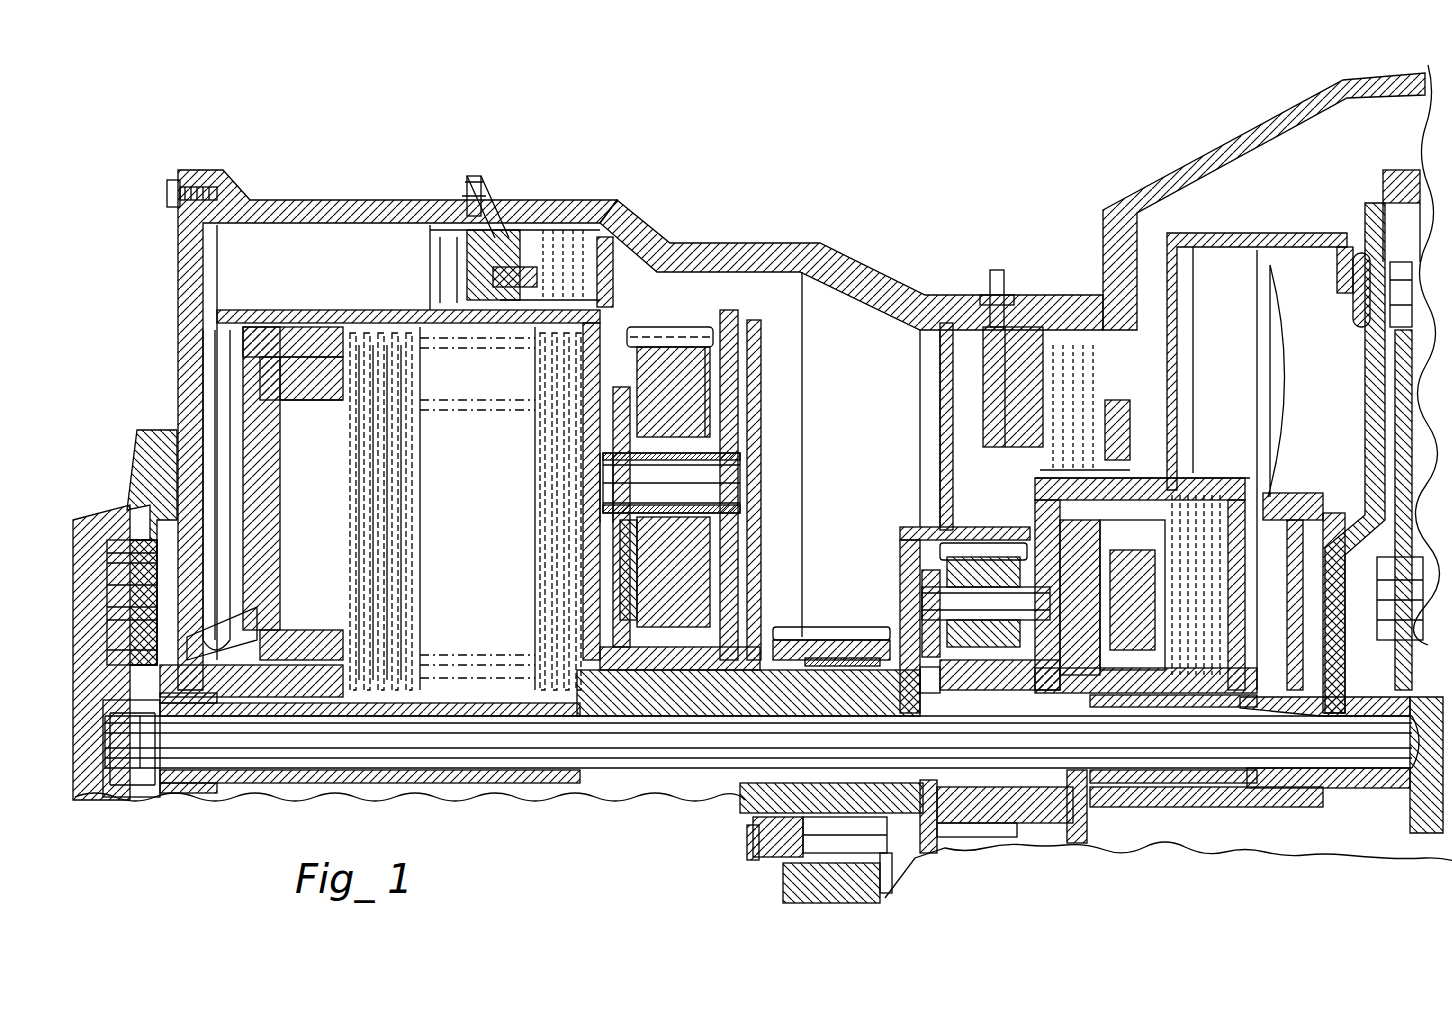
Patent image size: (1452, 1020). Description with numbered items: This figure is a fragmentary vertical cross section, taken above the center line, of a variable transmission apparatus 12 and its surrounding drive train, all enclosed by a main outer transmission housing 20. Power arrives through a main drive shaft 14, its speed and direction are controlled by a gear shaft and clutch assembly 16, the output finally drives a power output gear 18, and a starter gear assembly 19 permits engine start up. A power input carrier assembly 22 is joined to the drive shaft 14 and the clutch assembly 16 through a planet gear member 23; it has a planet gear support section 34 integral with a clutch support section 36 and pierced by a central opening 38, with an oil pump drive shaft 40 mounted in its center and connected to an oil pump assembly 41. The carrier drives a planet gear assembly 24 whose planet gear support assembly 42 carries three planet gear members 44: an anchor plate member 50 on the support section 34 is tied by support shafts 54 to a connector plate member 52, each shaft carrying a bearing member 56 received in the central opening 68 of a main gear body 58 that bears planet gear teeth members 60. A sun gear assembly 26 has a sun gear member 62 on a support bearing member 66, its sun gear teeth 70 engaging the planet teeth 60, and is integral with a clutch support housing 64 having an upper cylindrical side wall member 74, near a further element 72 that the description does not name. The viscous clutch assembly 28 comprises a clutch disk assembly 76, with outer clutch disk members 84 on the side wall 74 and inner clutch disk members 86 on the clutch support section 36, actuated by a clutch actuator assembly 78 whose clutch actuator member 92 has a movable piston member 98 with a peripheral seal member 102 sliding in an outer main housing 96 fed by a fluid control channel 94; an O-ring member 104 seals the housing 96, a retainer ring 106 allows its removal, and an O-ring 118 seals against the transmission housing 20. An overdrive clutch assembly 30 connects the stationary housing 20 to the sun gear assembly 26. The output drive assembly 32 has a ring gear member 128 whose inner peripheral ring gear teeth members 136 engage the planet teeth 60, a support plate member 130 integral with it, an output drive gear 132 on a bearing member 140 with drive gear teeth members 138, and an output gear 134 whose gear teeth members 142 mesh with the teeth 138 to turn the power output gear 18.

The variable transmission apparatus 12 is at (775, 295).
The main drive shaft 14 is at (1050, 843).
The gear shaft and clutch assembly 16 is at (1010, 470).
The power output gear 18 is at (880, 893).
The starter gear assembly 19 is at (1377, 160).
The main outer transmission housing 20 is at (628, 195).
The power input carrier assembly 22 is at (893, 573).
The planet gear member 23 is at (900, 533).
The planet gear assembly 24 is at (750, 398).
The sun gear assembly 26 is at (607, 692).
The viscous clutch assembly 28 is at (380, 245).
The overdrive clutch assembly 30 is at (555, 225).
The output drive assembly 32 is at (927, 520).
The planet gear support section 34 is at (810, 630).
The clutch support section 36 is at (507, 713).
The central opening 38 is at (390, 760).
The oil pump drive shaft 40 is at (195, 750).
The oil pump assembly 41 is at (95, 683).
The planet gear support assembly 42 is at (610, 440).
The planet gear members 44 is at (660, 330).
The anchor plate member 50 is at (705, 560).
The connector plate member 52 is at (615, 418).
The support shafts 54 is at (735, 478).
The bearing member 56 is at (620, 540).
The main gear body 58 is at (705, 590).
The planet gear teeth members 60 is at (683, 342).
The sun gear member 62 is at (677, 690).
The clutch support housing 64 is at (302, 318).
The support bearing member 66 is at (580, 690).
The central opening 68 is at (647, 690).
The sun gear teeth 70 is at (713, 690).
The housing rim 72 is at (610, 280).
The upper cylindrical side wall member 74 is at (400, 310).
The clutch disk assembly 76 is at (200, 385).
The clutch actuator assembly 78 is at (245, 490).
The outer clutch disk members 84 is at (355, 320).
The inner clutch disk members 86 is at (337, 680).
The clutch actuator member 92 is at (230, 432).
The fluid control channel 94 is at (270, 650).
The outer main housing 96 is at (248, 355).
The movable piston member 98 is at (235, 488).
The peripheral seal member 102 is at (253, 352).
The O-ring member 104 is at (280, 345).
The retainer ring 106 is at (243, 330).
The O-ring 118 is at (470, 215).
The ring gear member 128 is at (735, 322).
The support plate member 130 is at (760, 428).
The output drive gear 132 is at (737, 870).
The output gear 134 is at (953, 847).
The inner peripheral ring gear teeth members 136 is at (760, 340).
The drive gear teeth members 138 is at (848, 625).
The bearing member 140 is at (765, 865).
The gear teeth members 142 is at (883, 867).